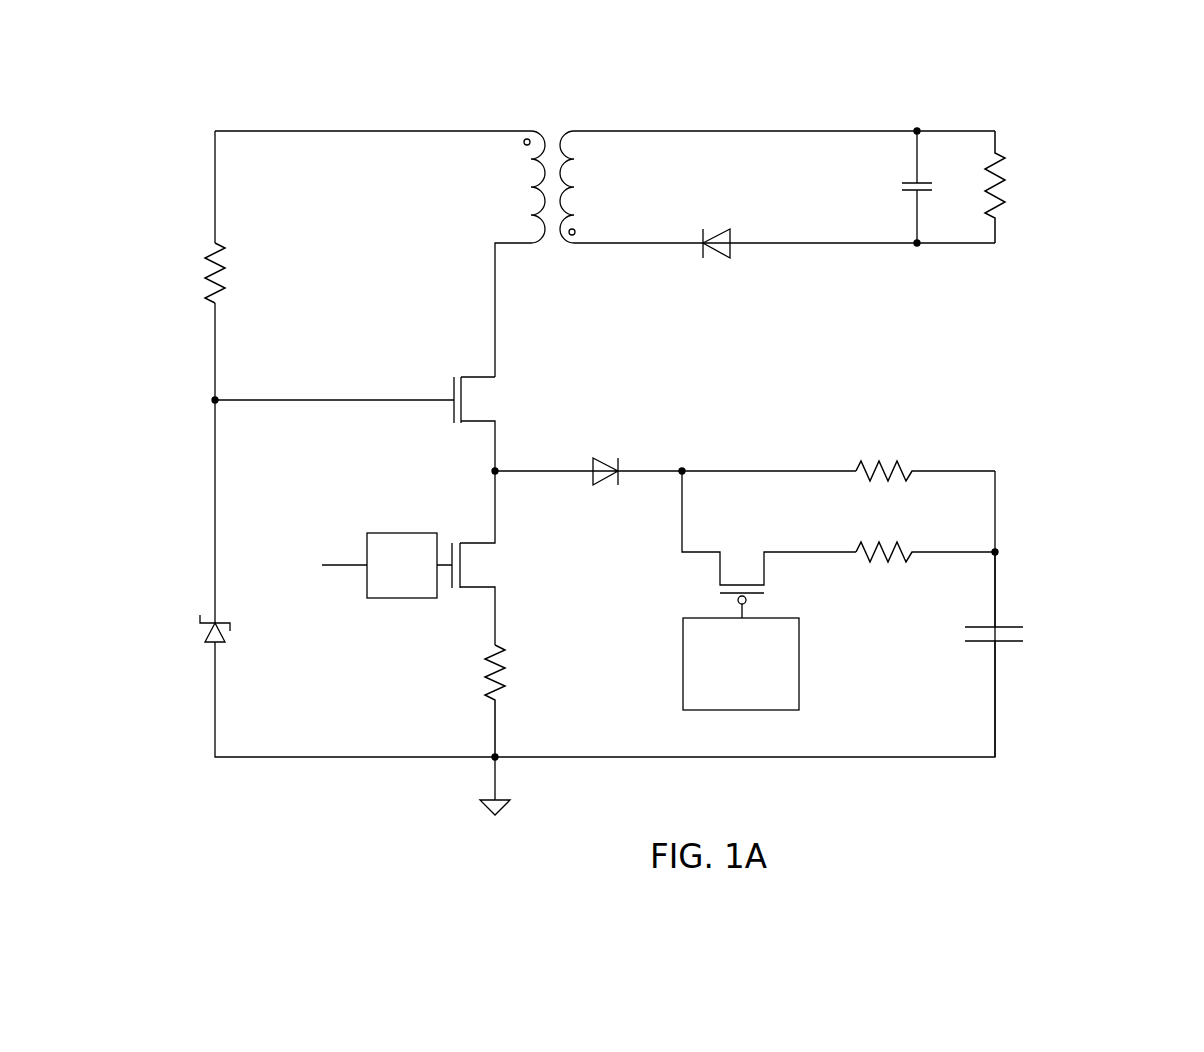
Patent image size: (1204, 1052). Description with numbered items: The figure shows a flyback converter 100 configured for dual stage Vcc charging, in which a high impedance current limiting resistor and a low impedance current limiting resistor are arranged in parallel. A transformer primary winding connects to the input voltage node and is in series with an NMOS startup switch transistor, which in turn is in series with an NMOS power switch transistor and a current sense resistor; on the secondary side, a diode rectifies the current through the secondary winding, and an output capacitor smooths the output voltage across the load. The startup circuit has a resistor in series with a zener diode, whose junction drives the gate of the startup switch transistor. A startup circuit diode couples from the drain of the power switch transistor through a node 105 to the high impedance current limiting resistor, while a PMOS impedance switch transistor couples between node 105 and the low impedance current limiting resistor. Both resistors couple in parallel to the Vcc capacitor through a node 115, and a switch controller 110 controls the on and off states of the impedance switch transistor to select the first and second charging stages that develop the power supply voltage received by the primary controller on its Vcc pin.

The flyback converter 100 is at (509, 71).
The node 105 is at (682, 468).
The switch controller 110 is at (799, 688).
The node 115 is at (998, 553).